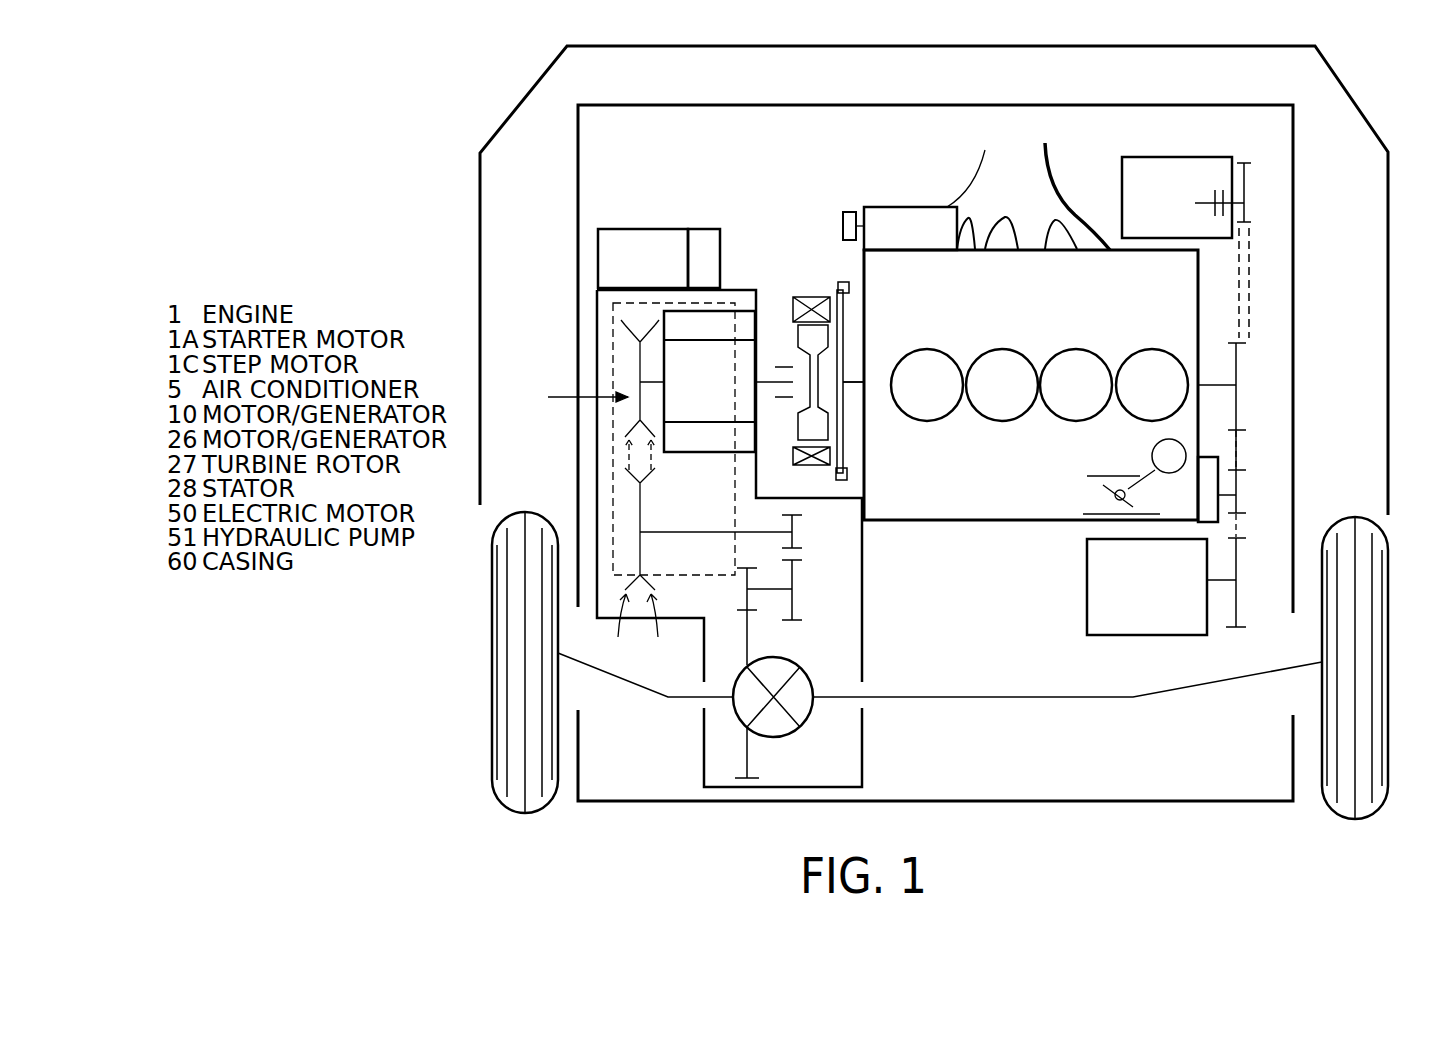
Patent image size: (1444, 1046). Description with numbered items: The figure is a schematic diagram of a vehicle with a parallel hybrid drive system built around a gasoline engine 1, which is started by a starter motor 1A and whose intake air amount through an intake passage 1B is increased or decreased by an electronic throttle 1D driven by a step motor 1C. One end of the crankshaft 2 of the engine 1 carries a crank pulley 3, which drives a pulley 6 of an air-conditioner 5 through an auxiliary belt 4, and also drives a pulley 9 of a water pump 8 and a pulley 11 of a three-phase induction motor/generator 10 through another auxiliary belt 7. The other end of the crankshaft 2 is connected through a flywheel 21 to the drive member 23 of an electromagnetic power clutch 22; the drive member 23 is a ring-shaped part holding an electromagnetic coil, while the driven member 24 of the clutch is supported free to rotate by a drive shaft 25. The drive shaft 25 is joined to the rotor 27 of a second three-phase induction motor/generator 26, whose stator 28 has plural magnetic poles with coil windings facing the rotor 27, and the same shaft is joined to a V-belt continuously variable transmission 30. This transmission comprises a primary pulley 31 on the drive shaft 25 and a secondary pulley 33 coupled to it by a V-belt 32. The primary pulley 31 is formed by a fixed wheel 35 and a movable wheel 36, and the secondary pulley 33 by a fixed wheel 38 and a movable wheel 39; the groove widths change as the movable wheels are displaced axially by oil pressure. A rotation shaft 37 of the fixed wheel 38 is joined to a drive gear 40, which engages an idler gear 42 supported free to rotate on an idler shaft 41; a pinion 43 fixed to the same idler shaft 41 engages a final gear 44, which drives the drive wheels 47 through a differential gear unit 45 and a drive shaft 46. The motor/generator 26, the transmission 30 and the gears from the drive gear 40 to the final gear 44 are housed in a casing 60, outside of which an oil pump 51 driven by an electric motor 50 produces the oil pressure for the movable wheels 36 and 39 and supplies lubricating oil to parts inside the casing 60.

The gasoline engine 1 is at (957, 497).
The starter motor 1A is at (922, 206).
The intake passage 1B is at (1090, 478).
The step motor 1C is at (1170, 474).
The electronic throttle 1D is at (1107, 492).
The crankshaft 2 is at (855, 380).
The crank pulley 3 is at (1238, 408).
The auxiliary belt 4 is at (1250, 288).
The air-conditioner 5 is at (1183, 177).
The pulley 6 is at (1248, 177).
The auxiliary belt 7 is at (1240, 522).
The water pump 8 is at (1222, 466).
The pulley 9 is at (1238, 500).
The motor/generator 10 is at (1137, 636).
The pulley 11 is at (1238, 612).
The flywheel 21 is at (846, 443).
The electromagnetic power clutch 22 is at (826, 337).
The drive member 23 is at (813, 297).
The driven member 24 is at (790, 330).
The drive shaft 25 is at (768, 385).
The motor/generator 26 is at (701, 421).
The rotor 27 is at (675, 415).
The stator 28 is at (648, 480).
The continuously variable transmission 30 is at (571, 390).
The primary pulley 31 is at (640, 360).
The V-belt 32 is at (624, 447).
The secondary pulley 33 is at (637, 517).
The fixed wheel 35 is at (652, 327).
The movable wheel 36 is at (627, 328).
The rotation shaft 37 is at (707, 535).
The fixed wheel 38 is at (657, 630).
The movable wheel 39 is at (613, 630).
The drive gear 40 is at (803, 518).
The idler shaft 41 is at (762, 592).
The idler gear 42 is at (795, 580).
The pinion 43 is at (743, 595).
The final gear 44 is at (749, 752).
The differential gear unit 45 is at (805, 720).
The drive shaft 46 is at (645, 689).
The drive wheels 47 is at (492, 652).
The electric motor 50 is at (703, 238).
The oil pump 51 is at (622, 228).
The casing 60 is at (862, 612).